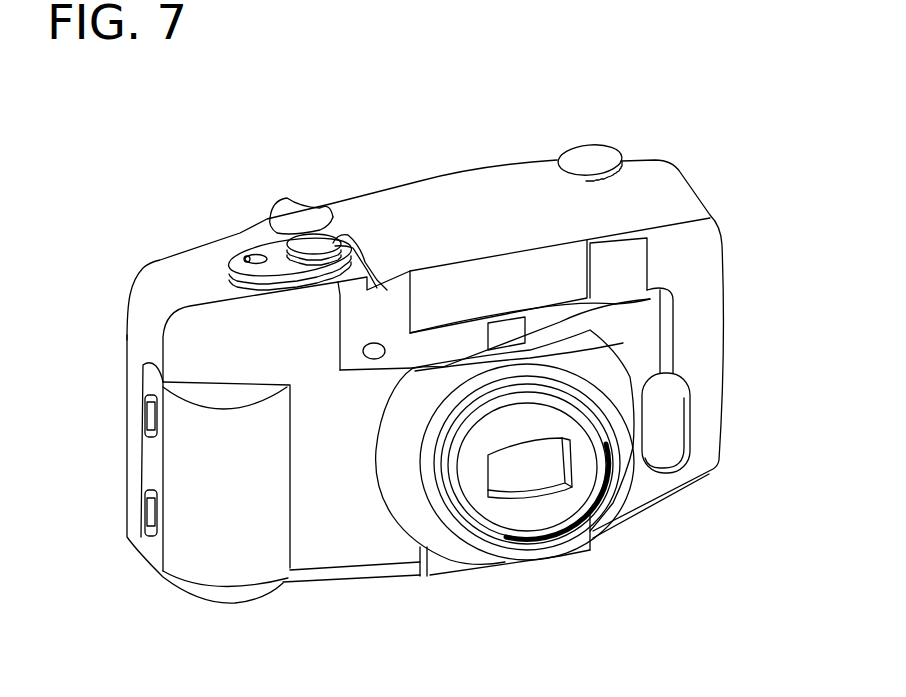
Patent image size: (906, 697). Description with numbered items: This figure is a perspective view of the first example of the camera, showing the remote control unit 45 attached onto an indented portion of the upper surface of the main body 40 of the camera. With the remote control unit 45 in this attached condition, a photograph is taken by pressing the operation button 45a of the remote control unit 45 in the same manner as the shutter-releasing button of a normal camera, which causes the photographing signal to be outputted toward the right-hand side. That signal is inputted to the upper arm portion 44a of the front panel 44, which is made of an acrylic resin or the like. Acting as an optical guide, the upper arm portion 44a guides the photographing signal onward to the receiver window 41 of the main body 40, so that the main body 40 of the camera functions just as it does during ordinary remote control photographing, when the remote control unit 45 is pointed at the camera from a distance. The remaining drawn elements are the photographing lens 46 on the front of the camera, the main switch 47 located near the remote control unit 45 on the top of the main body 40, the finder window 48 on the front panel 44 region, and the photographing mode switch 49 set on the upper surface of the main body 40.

The main body 40 is at (507, 163).
The receiver window 41 is at (380, 343).
The front panel 44 is at (650, 256).
The upper arm portion 44a is at (345, 236).
The remote control unit 45 is at (240, 245).
The operation button 45a is at (313, 236).
The photographing lens 46 is at (530, 488).
The main switch 47 is at (278, 198).
The finder window 48 is at (620, 313).
The photographing mode switch 49 is at (590, 144).